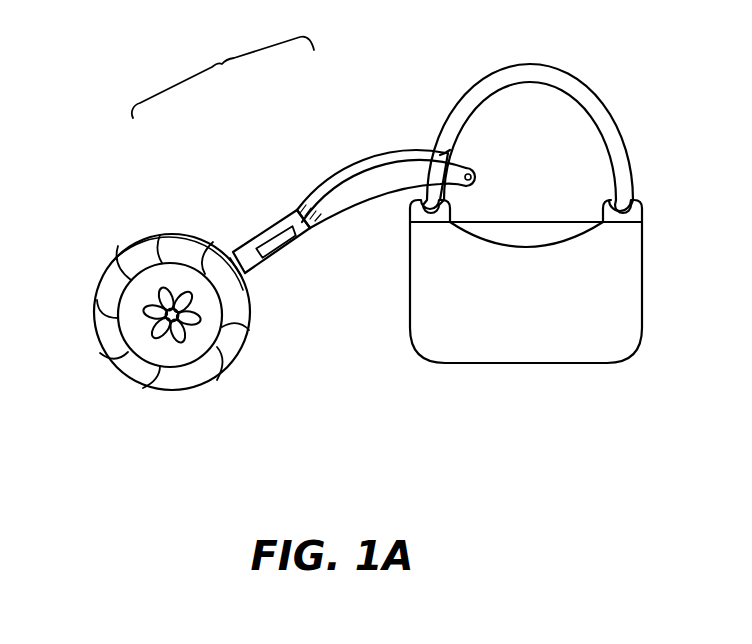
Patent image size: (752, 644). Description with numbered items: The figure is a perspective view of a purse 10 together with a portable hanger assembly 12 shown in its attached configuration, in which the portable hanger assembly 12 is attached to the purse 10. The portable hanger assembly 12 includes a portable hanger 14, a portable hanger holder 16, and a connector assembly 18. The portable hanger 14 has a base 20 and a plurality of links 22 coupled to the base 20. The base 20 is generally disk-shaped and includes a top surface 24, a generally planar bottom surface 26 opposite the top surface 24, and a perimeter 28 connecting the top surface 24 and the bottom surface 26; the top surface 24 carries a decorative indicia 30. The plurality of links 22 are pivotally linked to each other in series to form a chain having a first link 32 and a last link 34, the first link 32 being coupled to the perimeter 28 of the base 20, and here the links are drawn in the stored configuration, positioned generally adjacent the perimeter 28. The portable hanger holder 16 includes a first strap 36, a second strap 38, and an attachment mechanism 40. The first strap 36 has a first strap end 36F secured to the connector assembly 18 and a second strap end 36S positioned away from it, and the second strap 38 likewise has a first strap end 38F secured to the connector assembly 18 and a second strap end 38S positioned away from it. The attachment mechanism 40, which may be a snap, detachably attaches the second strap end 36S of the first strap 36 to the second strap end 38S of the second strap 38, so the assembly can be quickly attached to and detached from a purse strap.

The purse 10 is at (571, 338).
The portable hanger assembly 12 is at (223, 70).
The portable hanger 14 is at (173, 277).
The portable hanger holder 16 is at (363, 166).
The connector assembly 18 is at (276, 221).
The base 20 is at (175, 353).
The plurality of links 22 is at (110, 337).
The top surface 24 is at (117, 263).
The bottom surface 26 is at (133, 233).
The perimeter 28 is at (233, 365).
The decorative indicia 30 is at (173, 317).
The first link 32 is at (197, 262).
The last link 34 is at (233, 330).
The first strap 36 is at (400, 178).
The first strap end 36F is at (317, 228).
The second strap end 36S is at (470, 170).
The second strap 38 is at (390, 163).
The first strap end 38F is at (312, 200).
The second strap end 38S is at (460, 150).
The attachment mechanism 40 is at (472, 179).